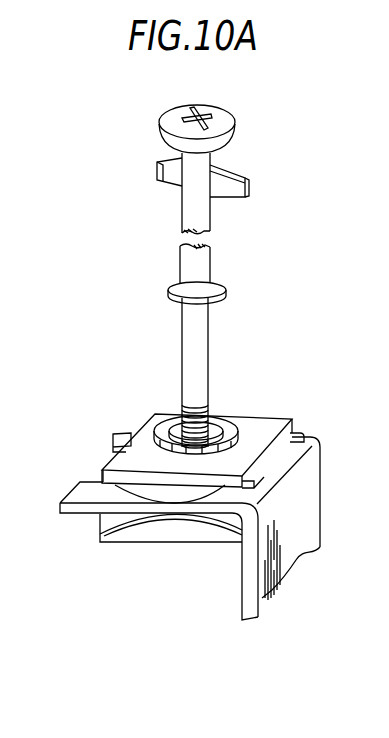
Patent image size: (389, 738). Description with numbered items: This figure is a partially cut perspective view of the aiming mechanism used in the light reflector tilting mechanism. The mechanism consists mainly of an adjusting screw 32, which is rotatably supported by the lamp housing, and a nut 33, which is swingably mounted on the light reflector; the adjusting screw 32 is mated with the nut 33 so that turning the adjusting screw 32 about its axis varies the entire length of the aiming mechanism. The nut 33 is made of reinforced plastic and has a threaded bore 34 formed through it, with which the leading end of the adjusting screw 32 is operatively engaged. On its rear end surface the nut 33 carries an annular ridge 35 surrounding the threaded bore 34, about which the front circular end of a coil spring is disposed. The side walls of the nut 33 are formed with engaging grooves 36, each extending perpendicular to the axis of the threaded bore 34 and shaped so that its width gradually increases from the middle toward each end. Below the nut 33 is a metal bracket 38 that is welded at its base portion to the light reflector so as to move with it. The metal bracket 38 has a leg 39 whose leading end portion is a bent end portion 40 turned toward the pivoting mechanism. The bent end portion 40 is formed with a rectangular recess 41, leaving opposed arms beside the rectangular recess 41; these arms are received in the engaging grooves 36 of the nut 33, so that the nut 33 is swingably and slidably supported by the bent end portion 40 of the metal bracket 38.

The adjusting screw 32 is at (182, 206).
The nut 33 is at (281, 420).
The threaded bore 34 is at (210, 413).
The annular ridge 35 is at (238, 415).
The engaging groove 36 is at (292, 437).
The metal bracket 38 is at (321, 490).
The leg 39 is at (293, 565).
The bent end portion 40 is at (80, 508).
The rectangular recess 41 is at (103, 482).